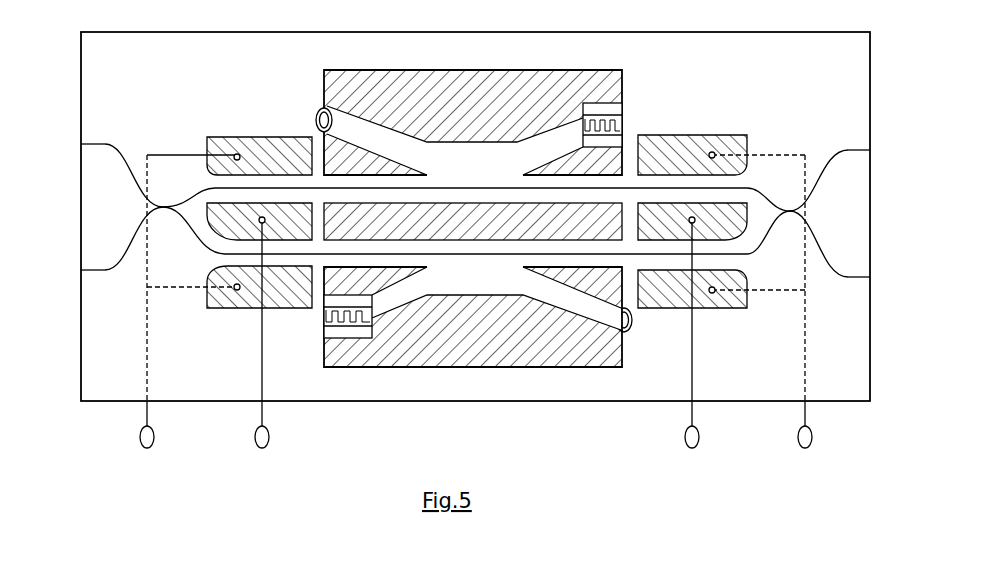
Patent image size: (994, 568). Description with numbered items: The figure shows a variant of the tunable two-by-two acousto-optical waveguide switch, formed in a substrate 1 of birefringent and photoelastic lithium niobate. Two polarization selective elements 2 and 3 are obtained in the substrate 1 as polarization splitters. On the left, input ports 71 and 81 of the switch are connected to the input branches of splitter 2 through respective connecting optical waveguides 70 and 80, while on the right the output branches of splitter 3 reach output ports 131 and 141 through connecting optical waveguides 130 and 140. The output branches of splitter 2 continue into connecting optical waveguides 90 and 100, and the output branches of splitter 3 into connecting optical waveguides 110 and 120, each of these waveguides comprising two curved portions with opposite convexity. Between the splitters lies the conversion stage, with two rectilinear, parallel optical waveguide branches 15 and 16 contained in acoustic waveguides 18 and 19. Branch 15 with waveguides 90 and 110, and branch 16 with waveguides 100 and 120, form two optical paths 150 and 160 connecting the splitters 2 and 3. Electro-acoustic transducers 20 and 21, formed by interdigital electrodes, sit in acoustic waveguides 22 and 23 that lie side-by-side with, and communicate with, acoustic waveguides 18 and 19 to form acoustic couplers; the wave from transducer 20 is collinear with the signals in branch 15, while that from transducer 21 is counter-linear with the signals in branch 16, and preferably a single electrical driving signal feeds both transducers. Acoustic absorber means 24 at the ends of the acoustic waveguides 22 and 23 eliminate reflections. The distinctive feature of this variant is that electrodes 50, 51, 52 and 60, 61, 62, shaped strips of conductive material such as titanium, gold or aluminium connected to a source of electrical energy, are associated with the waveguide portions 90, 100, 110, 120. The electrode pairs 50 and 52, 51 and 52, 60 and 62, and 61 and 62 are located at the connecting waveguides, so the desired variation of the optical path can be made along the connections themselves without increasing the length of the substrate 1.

The substrate 1 is at (625, 404).
The polarization selective element 2 is at (163, 203).
The polarization selective element 3 is at (790, 215).
The optical waveguide branch 15 is at (440, 183).
The optical waveguide branch 16 is at (443, 258).
The acoustic waveguide 18 is at (535, 182).
The acoustic waveguide 19 is at (573, 252).
The electro-acoustic transducer 20 is at (622, 125).
The electro-acoustic transducer 21 is at (324, 322).
The acoustic waveguide 22 is at (545, 160).
The acoustic waveguide 23 is at (388, 300).
The acoustic absorber means 24 is at (322, 108).
The electrode 50 is at (258, 137).
The electrode 51 is at (245, 308).
The electrode 52 is at (212, 215).
The electrode 60 is at (712, 135).
The electrode 61 is at (715, 308).
The electrode 62 is at (742, 222).
The connecting optical waveguide 70 is at (103, 141).
The input port 71 is at (81, 144).
The connecting optical waveguide 80 is at (103, 273).
The input port 81 is at (81, 270).
The connecting optical waveguide 90 is at (197, 180).
The connecting optical waveguide 100 is at (202, 243).
The connecting optical waveguide 110 is at (757, 185).
The connecting optical waveguide 120 is at (757, 259).
The connecting optical waveguide 130 is at (848, 147).
The output port 131 is at (870, 150).
The connecting optical waveguide 140 is at (848, 280).
The output port 141 is at (870, 277).
The optical path 150 is at (482, 180).
The optical path 160 is at (488, 262).